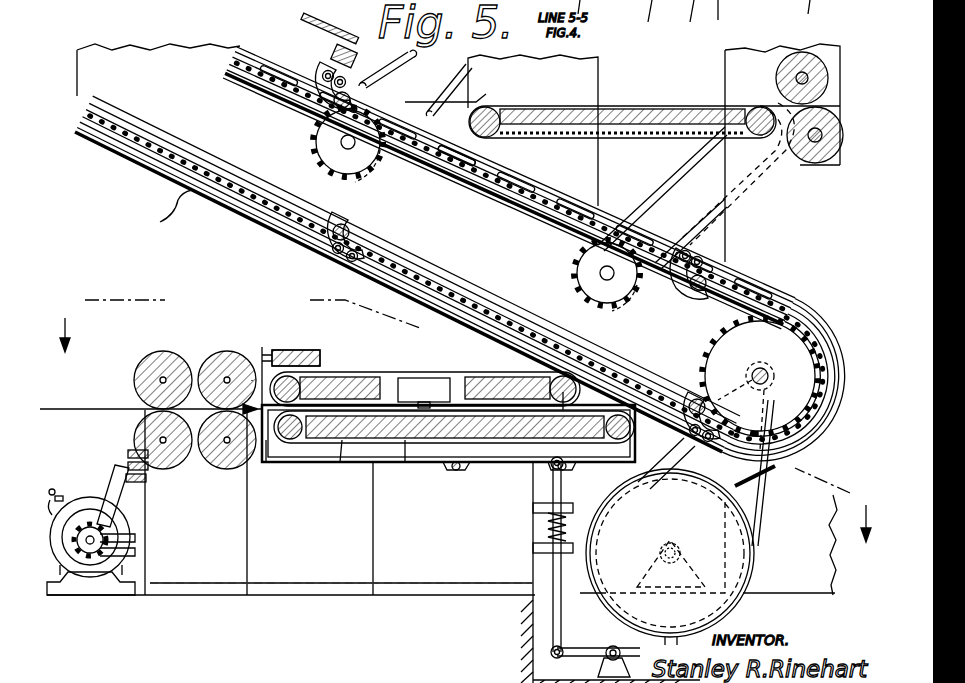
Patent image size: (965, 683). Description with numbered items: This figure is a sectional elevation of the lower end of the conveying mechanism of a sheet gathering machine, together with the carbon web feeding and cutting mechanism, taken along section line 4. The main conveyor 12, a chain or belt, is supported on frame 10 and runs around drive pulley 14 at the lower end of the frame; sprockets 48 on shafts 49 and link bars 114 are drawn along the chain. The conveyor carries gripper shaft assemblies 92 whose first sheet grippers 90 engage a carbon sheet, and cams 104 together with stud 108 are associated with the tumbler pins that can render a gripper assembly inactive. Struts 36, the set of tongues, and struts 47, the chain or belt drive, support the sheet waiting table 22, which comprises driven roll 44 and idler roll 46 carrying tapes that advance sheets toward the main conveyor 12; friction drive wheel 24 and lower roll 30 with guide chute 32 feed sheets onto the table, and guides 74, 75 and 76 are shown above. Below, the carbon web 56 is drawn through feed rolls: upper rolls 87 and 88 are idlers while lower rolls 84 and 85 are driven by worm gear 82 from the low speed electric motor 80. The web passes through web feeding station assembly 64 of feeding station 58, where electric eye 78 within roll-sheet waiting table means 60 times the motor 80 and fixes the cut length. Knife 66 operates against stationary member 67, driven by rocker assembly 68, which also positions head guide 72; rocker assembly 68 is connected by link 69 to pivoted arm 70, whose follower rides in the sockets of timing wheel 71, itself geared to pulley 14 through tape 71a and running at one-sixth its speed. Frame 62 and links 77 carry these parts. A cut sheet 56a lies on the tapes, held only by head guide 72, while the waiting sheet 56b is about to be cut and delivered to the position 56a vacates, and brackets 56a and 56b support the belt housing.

The section line 4- 4 is at (463, 417).
The frame 10 is at (155, 213).
The main conveyor 12 is at (150, 166).
The drive pulley 14 is at (775, 332).
The sheet waiting table 22 is at (678, 98).
The friction drive wheel 24 is at (810, 44).
The lower feed roll 30 is at (835, 168).
The guide chute 32 is at (800, 165).
The tongues 36 is at (427, 98).
The driven roll 44 is at (772, 108).
The idler roll 46 is at (492, 110).
The chain or belt drive 47 is at (702, 206).
The sprocket 48 is at (316, 152).
The sprocket shaft 49 is at (341, 142).
The web 56 is at (128, 409).
The cut sheet 56a is at (525, 472).
The waiting sheet 56b is at (344, 464).
The feeding station 58 is at (210, 340).
The roll-sheet waiting table means 60 is at (452, 472).
The frame 62 is at (378, 527).
The web feeding station assembly 64 is at (458, 349).
The knife 66 is at (268, 464).
The stationary member 67 is at (268, 350).
The rocker assembly 68 is at (405, 465).
The link 69 is at (553, 612).
The arm 70 is at (600, 648).
The timing wheel 71 is at (772, 545).
The drum tape 71a is at (768, 455).
The head guide 72 is at (692, 405).
The guide 74 is at (680, 22).
The guide 75 is at (690, 8).
The guide 76 is at (638, 22).
The link 77 is at (540, 378).
The electric-eye device 78 is at (410, 378).
The electric motor 80 is at (80, 466).
The worm gear 82 is at (116, 462).
The lower roll 84 is at (188, 470).
The lower roll 85 is at (230, 470).
The idler shaft 87 is at (158, 354).
The idler shaft 88 is at (240, 352).
The first sheet grippers 90 is at (320, 88).
The gripper shaft assembly 92 is at (345, 262).
The cams 104 is at (300, 30).
The stud 108 is at (345, 48).
The pins 114 is at (448, 150).